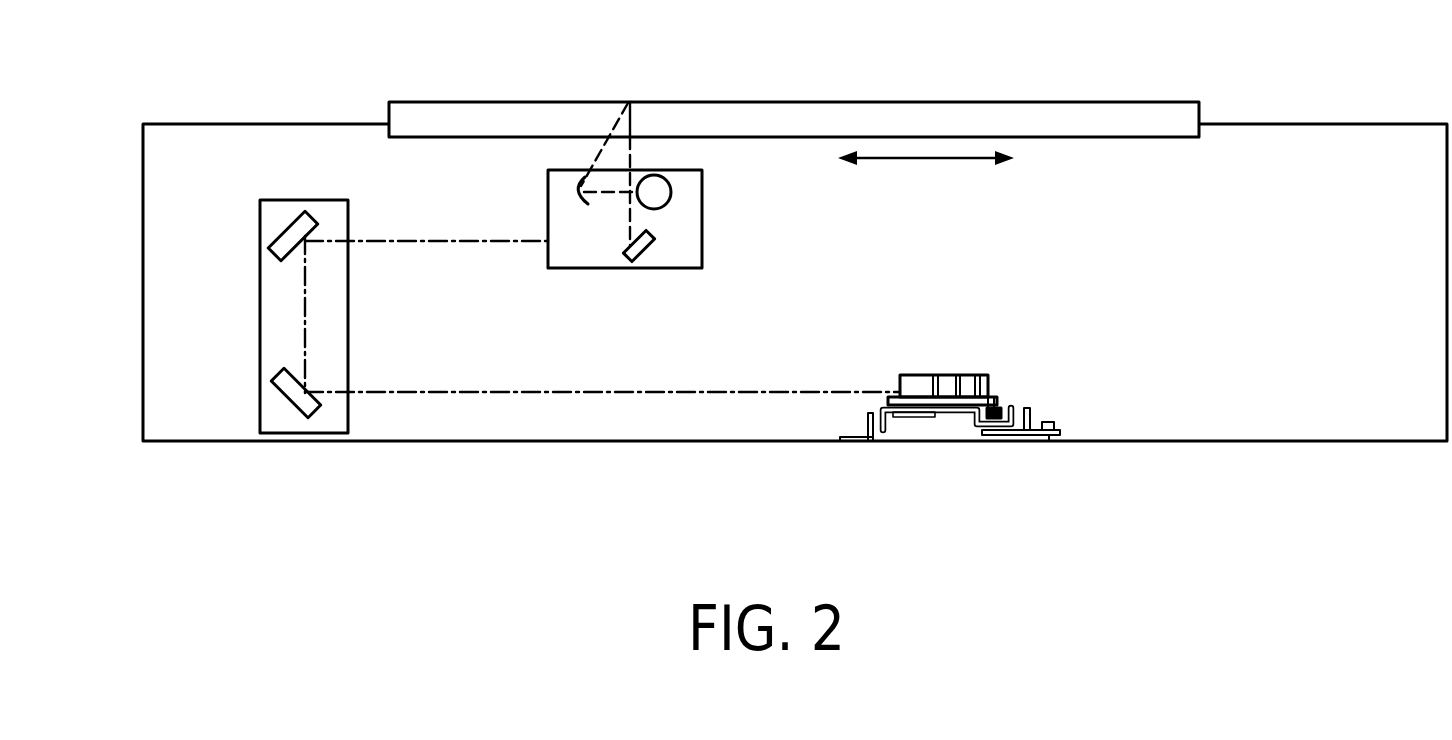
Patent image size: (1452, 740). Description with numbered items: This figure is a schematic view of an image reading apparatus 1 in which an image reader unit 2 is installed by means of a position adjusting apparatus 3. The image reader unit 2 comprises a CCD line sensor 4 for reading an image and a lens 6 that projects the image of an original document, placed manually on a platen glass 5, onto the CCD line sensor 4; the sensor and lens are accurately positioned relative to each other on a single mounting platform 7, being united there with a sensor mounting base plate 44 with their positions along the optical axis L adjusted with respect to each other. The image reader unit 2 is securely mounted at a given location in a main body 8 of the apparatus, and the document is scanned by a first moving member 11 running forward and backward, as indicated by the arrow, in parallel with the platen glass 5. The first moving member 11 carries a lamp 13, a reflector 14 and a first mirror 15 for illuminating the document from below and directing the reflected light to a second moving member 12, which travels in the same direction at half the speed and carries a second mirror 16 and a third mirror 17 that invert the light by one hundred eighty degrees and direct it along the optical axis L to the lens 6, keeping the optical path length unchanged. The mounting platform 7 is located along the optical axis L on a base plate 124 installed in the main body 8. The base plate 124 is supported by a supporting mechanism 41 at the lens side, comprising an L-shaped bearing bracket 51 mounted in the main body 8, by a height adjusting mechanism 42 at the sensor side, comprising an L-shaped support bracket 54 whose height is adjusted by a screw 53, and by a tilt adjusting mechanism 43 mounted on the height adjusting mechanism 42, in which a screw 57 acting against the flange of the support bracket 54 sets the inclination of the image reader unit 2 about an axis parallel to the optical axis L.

The image reading apparatus 1 is at (1314, 113).
The image reader unit 2 is at (907, 396).
The position adjusting apparatus 3 is at (1046, 391).
The CCD line sensor 4 is at (994, 394).
The platen glass 5 is at (988, 112).
The lens 6 is at (900, 388).
The mounting platform 7 is at (952, 411).
The main body 8 is at (1220, 442).
The first moving member 11 is at (563, 270).
The second moving member 12 is at (272, 386).
The lamp 13 is at (672, 192).
The reflector 14 is at (577, 193).
The first mirror 15 is at (650, 254).
The second mirror 16 is at (306, 216).
The third mirror 17 is at (299, 408).
The supporting mechanism 41 is at (853, 452).
The height adjusting mechanism 42 is at (1090, 421).
The tilt adjusting mechanism 43 is at (1014, 376).
The sensor mounting base plate 44 is at (986, 374).
The bearing bracket 51 is at (852, 442).
The screw 53 is at (1049, 440).
The support bracket 54 is at (1033, 410).
The screw 57 is at (1051, 382).
The base plate 124 is at (961, 407).
The optical axis L is at (633, 393).